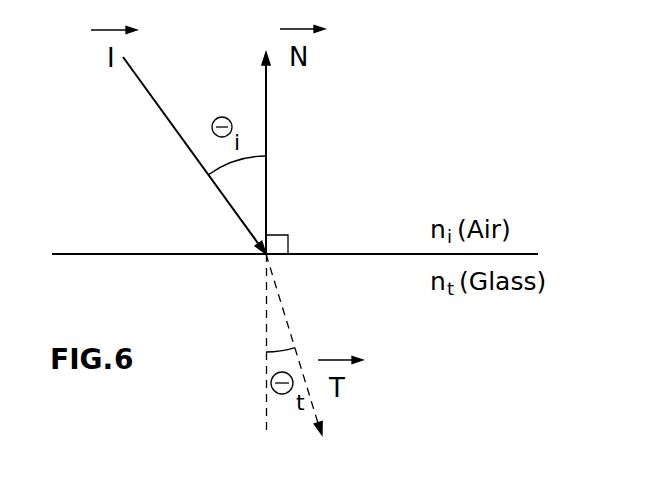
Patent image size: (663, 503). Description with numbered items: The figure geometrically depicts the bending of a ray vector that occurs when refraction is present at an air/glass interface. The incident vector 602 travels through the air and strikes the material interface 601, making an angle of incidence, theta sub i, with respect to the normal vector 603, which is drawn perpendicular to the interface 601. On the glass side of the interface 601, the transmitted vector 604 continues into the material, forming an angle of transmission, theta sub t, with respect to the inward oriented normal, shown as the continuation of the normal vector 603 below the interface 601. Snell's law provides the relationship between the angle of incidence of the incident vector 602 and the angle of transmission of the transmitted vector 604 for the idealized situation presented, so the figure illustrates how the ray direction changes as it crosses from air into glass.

The material interface 601 is at (88, 254).
The incident vector 602 is at (186, 146).
The normal vector 603 is at (266, 143).
The transmitted vector 604 is at (293, 344).